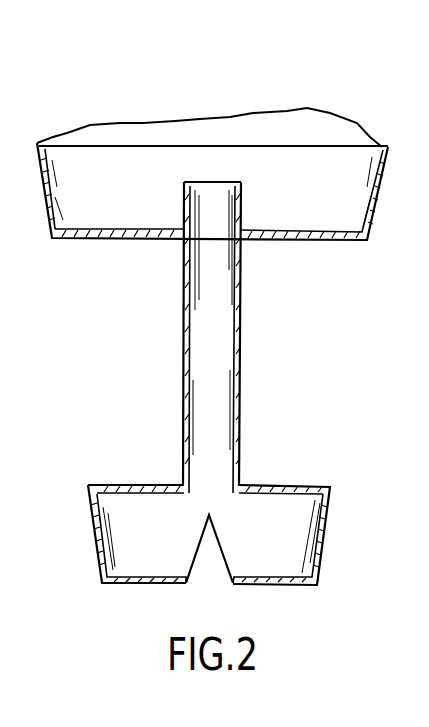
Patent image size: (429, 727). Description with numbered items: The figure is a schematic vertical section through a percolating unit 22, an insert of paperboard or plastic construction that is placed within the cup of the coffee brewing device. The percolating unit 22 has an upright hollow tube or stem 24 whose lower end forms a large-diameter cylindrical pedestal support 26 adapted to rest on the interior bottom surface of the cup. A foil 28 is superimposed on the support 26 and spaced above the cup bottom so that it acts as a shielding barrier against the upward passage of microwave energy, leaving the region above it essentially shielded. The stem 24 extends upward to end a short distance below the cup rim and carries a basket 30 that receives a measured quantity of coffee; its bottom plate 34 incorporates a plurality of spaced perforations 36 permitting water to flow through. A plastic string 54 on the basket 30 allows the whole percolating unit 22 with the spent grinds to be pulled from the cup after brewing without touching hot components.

The percolating unit 22 is at (160, 333).
The hollow tube or stem 24 is at (241, 347).
The pedestal support 26 is at (322, 545).
The foil 28 is at (288, 485).
The basket 30 is at (75, 238).
The bottom plate 34 is at (315, 240).
The perforations 36 is at (262, 240).
The plastic string 54 is at (315, 110).